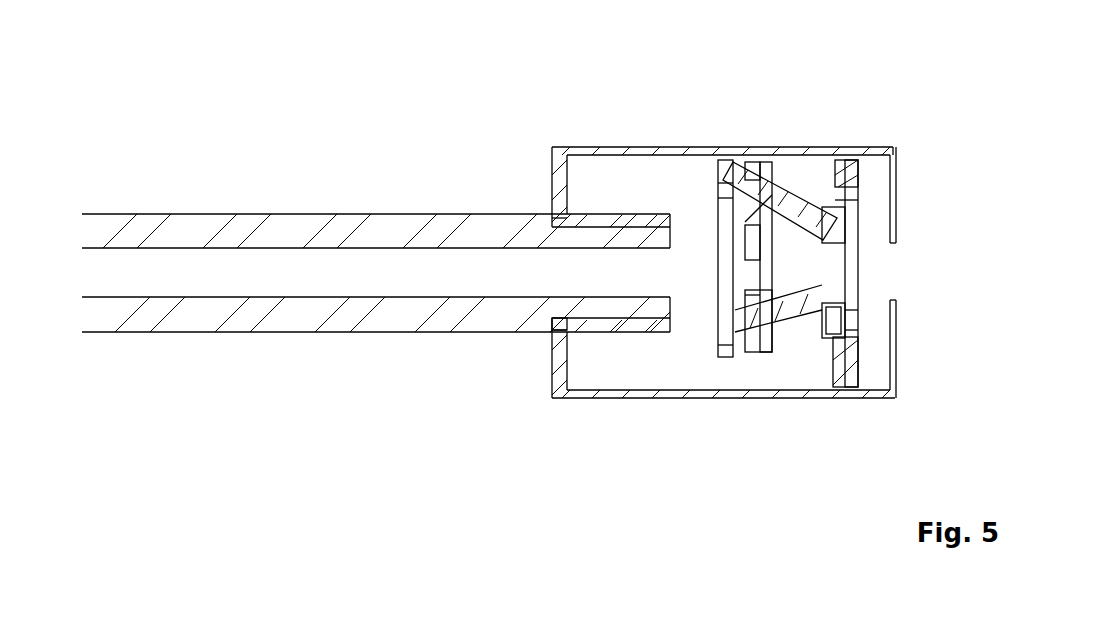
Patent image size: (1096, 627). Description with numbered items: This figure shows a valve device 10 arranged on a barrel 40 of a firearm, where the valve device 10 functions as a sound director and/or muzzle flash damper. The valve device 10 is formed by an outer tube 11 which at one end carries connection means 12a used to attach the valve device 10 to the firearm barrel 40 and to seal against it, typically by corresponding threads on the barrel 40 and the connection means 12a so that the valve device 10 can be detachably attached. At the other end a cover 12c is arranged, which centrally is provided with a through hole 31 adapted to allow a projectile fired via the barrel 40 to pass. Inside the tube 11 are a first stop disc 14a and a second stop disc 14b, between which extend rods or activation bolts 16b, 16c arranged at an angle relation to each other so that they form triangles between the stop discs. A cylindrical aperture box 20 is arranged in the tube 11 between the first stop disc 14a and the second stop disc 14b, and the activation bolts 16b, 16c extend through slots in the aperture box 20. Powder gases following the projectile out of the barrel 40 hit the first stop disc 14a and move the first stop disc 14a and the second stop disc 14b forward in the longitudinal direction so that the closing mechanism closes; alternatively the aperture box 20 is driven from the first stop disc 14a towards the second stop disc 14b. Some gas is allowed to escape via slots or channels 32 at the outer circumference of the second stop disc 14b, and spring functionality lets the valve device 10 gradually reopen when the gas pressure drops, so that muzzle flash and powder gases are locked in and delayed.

The valve device 10 is at (594, 118).
The outer tube 11 is at (707, 147).
The connection means 12a is at (590, 324).
The cover 12c is at (896, 166).
The first stop disc 14a is at (722, 345).
The second stop disc 14b is at (862, 160).
The activation bolt 16b is at (806, 162).
The activation bolt 16c is at (788, 305).
The aperture box 20 is at (752, 330).
The through hole 31 is at (902, 288).
The slots or channels 32 is at (850, 387).
The barrel 40 is at (322, 228).